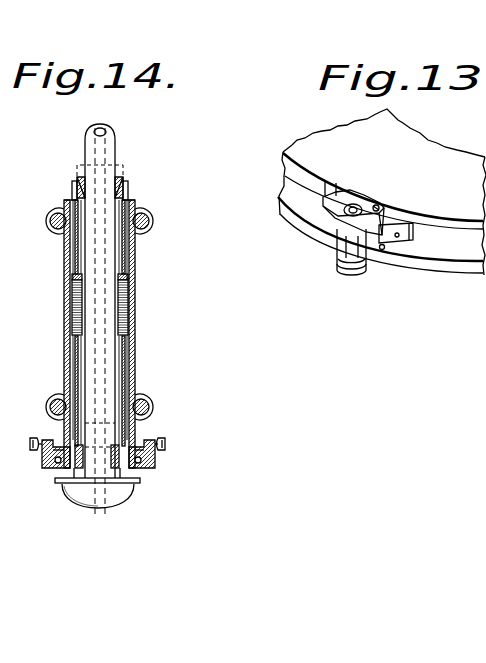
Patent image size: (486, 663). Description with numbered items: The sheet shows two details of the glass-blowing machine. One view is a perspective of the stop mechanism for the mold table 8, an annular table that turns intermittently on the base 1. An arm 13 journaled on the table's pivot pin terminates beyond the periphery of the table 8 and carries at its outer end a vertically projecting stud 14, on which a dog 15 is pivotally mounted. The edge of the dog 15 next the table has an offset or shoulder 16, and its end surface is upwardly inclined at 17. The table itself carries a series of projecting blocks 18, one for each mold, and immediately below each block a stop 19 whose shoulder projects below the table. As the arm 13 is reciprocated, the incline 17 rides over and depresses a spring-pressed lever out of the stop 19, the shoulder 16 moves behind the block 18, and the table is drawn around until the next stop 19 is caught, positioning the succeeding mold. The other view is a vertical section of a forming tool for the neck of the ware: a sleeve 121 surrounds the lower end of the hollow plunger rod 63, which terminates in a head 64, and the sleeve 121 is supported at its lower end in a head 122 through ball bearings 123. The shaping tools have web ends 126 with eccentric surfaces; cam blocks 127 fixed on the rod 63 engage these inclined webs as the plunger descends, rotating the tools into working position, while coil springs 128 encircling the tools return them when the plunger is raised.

In FIG. 13, the base 1 is at (382, 181).
In FIG. 13, the mold table 8 is at (337, 149).
In FIG. 13, the arm 13 is at (341, 277).
In FIG. 13, the stud 14 is at (365, 274).
In FIG. 13, the dog 15 is at (323, 210).
In FIG. 13, the shoulder 16 is at (367, 196).
In FIG. 13, the incline 17 is at (383, 248).
In FIG. 13, the block 18 is at (378, 207).
In FIG. 13, the stop 19 is at (452, 198).
In FIG. 14, the hollow plunger rod 63 is at (107, 298).
In FIG. 14, the head 64 is at (88, 507).
In FIG. 14, the sleeve 121 is at (122, 337).
In FIG. 14, the head 122 is at (155, 458).
In FIG. 14, the ball bearings 123 is at (142, 467).
In FIG. 14, the web ends 126 is at (129, 189).
In FIG. 14, the cam blocks 127 is at (124, 179).
In FIG. 14, the coil springs 128 is at (132, 310).